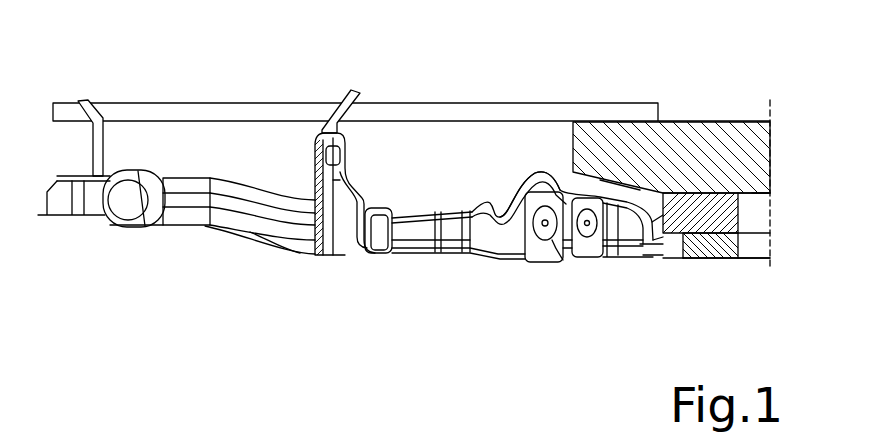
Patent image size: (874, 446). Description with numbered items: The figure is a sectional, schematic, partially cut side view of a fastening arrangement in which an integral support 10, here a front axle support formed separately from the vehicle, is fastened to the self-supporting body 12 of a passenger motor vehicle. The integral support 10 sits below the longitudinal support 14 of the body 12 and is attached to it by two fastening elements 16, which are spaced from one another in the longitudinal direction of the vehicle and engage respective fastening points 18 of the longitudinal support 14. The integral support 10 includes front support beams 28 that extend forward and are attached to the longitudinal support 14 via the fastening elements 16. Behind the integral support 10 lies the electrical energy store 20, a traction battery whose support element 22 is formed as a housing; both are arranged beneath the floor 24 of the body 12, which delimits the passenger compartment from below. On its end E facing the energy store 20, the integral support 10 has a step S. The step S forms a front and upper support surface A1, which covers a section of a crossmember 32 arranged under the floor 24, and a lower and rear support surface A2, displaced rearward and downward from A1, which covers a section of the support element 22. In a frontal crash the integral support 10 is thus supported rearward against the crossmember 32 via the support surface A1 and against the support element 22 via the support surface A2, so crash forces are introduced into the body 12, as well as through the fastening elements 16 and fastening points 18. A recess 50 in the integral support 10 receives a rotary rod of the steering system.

The integral support 10 is at (226, 243).
The self-supporting body 12 is at (757, 157).
The longitudinal support 14 is at (219, 112).
The fastening element 16 is at (97, 158).
The fastening point 18 is at (106, 100).
The electrical energy store 20 is at (760, 263).
The support element 22 is at (710, 253).
The floor 24 is at (752, 193).
The front support beam 28 is at (277, 237).
The crossmember 32 is at (720, 213).
The recess 50 is at (497, 197).
The end E is at (637, 183).
The step S is at (657, 207).
The front and upper support surface A1 is at (652, 255).
The lower and rear support surface A2 is at (683, 258).